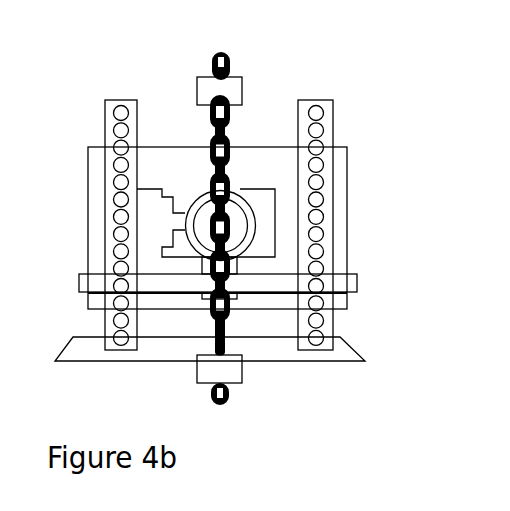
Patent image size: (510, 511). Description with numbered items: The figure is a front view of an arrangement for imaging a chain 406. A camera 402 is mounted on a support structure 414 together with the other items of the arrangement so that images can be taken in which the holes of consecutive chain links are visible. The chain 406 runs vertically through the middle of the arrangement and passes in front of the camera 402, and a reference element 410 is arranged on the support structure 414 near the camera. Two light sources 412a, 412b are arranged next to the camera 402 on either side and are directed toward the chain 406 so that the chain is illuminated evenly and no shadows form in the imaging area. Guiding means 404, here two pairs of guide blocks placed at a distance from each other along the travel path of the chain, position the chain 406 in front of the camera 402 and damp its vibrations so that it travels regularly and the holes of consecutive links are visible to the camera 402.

The camera 402 is at (238, 191).
The guiding means 404 is at (197, 97).
The chain 406 is at (232, 398).
The reference element 410 is at (146, 228).
The light source 412a is at (318, 100).
The light source 412b is at (106, 146).
The support structure 414 is at (90, 200).